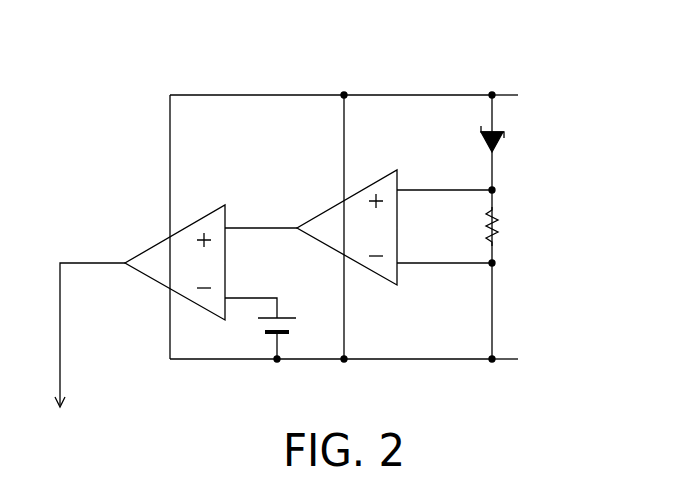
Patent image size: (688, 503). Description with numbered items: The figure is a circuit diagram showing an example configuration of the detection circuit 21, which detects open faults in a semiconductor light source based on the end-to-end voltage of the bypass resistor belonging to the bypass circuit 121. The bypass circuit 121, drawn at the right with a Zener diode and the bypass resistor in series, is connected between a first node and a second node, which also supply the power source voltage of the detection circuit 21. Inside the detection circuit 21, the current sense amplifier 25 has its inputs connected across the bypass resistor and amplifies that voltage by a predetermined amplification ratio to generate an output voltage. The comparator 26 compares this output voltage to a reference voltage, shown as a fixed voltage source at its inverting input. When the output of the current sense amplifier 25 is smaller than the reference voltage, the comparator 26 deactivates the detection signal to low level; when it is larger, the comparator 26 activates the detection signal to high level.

The detection circuit 21 is at (445, 52).
The current sense amplifier 25 is at (325, 207).
The comparator 26 is at (154, 243).
The bypass circuit 121 is at (543, 110).